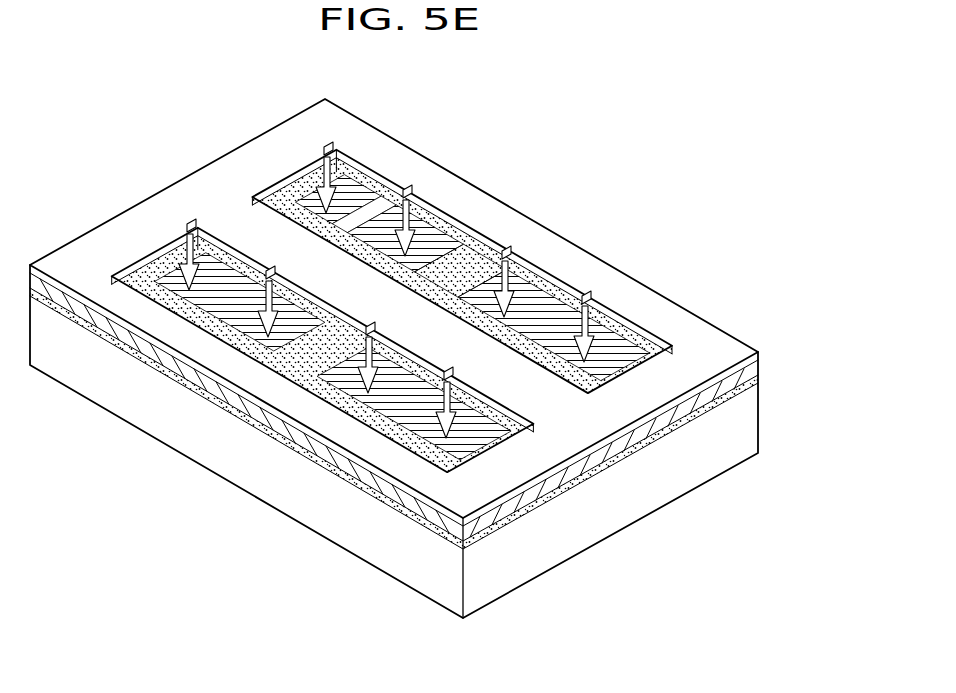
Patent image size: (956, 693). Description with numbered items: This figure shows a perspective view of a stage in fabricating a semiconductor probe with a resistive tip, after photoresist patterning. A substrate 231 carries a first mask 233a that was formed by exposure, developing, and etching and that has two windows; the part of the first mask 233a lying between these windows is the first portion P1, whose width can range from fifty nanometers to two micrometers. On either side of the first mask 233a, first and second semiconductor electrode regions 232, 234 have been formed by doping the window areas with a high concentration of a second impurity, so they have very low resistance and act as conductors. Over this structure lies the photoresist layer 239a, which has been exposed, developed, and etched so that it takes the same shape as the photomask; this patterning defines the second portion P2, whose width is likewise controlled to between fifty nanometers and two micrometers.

The substrate 231 is at (420, 570).
The photoresist layer 239a is at (545, 238).
The first semiconductor electrode region 232 is at (237, 312).
The first mask 233a is at (300, 382).
The second semiconductor electrode region 234 is at (412, 408).
The first portion P1 is at (447, 287).
The second portion P2 is at (330, 273).